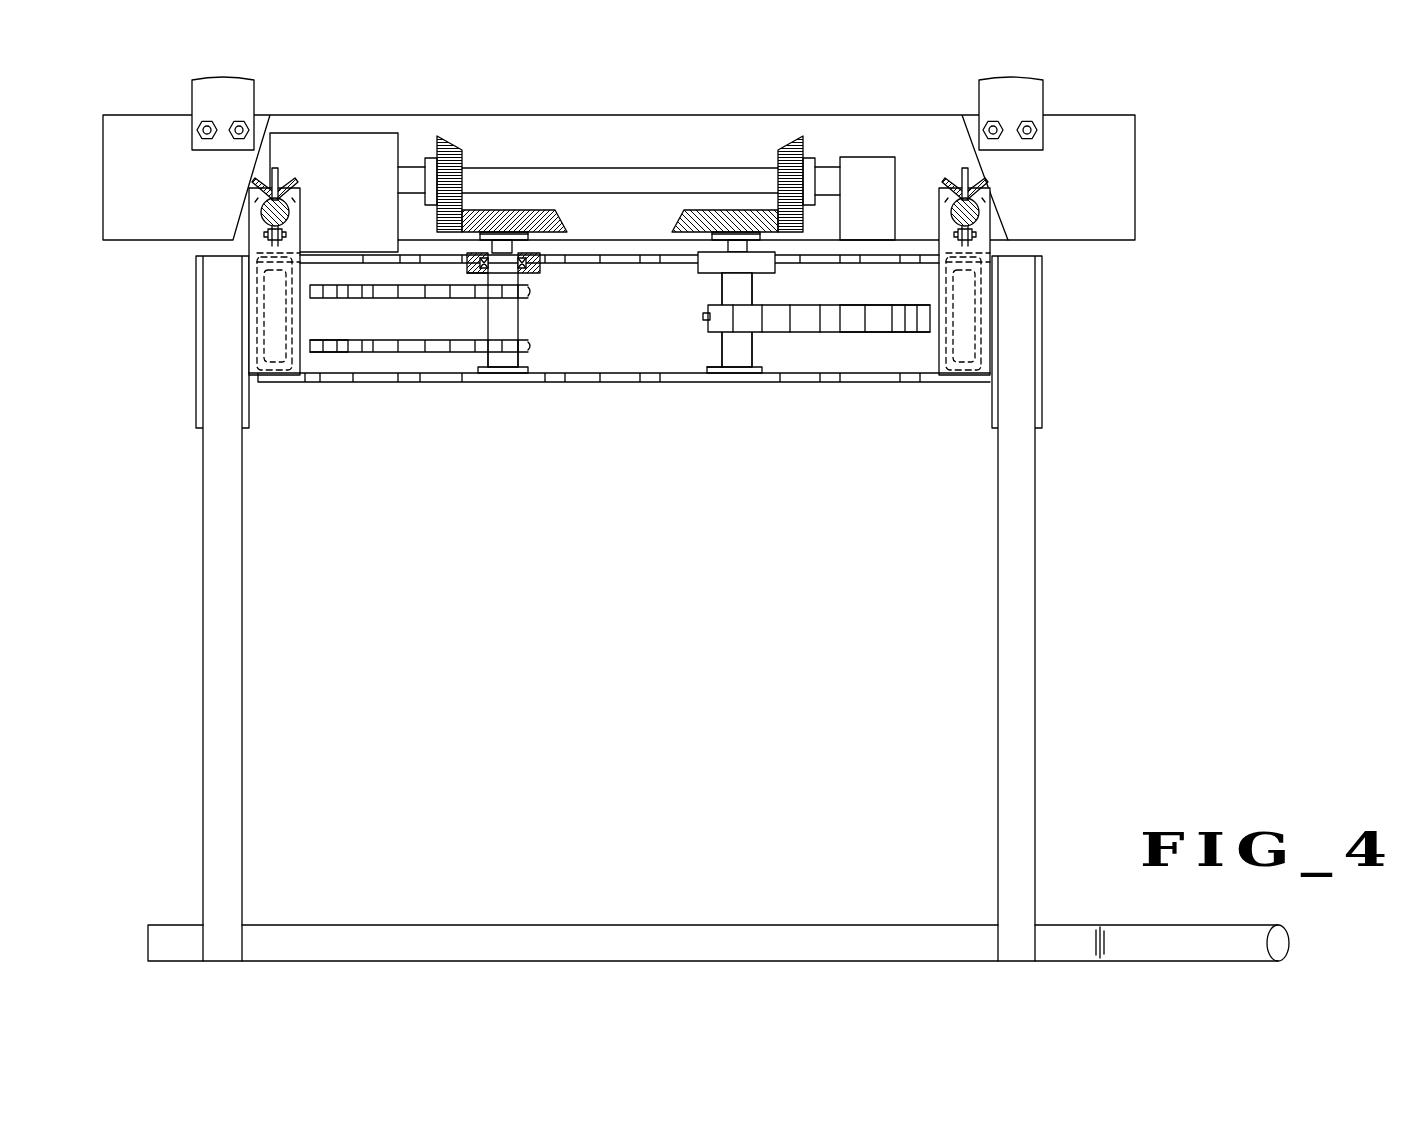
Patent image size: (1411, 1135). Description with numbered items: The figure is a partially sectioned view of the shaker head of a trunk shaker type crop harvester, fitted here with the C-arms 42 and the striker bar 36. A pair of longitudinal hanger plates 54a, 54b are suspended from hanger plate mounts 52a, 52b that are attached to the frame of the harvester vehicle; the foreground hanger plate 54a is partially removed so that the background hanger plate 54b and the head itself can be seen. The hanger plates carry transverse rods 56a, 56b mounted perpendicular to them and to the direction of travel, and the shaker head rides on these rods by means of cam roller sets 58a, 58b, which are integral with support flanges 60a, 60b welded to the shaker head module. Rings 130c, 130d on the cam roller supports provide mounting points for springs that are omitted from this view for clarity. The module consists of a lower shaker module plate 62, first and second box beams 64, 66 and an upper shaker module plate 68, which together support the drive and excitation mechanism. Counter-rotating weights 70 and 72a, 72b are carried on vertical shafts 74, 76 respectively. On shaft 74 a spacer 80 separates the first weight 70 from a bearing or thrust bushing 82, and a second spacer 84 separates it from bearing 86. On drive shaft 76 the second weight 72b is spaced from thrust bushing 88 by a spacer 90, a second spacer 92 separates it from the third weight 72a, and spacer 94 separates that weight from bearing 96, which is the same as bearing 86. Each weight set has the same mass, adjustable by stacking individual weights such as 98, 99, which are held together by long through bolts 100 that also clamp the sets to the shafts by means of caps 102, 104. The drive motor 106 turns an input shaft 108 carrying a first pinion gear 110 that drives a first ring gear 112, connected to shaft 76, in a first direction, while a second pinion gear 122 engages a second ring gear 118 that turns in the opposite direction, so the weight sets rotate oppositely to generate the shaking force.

The striker bar 36 is at (650, 925).
The C-arms 42 is at (242, 718).
The hanger plate mount 52a is at (192, 90).
The hanger plate mount 52b is at (1045, 89).
The longitudinal hanger plate 54a is at (170, 177).
The longitudinal hanger plate 54b is at (646, 160).
The transverse rod 56a is at (262, 217).
The transverse rod 56b is at (985, 212).
The cam roller set 58a is at (290, 184).
The cam roller set 58b is at (985, 190).
The support flange 60a is at (257, 234).
The support flange 60b is at (1013, 257).
The lower shaker module plate 62 is at (490, 385).
The first box beam 64 is at (950, 365).
The second box beam 66 is at (262, 345).
The upper shaker module plate 68 is at (620, 263).
The first weight 70 is at (810, 310).
The third weight 72a is at (372, 298).
The second weight 72b is at (408, 352).
The vertical shaft 74 is at (705, 250).
The vertical drive shaft 76 is at (530, 247).
The spacer 80 is at (760, 345).
The thrust bushing 82 is at (705, 385).
The second spacer 84 is at (752, 283).
The bearing 86 is at (700, 268).
The thrust bushing 88 is at (530, 373).
The spacer 90 is at (520, 358).
The second spacer 92 is at (520, 315).
The spacer 94 is at (540, 263).
The bearing 96 is at (470, 262).
The individual weight 98 is at (855, 332).
The individual weight 99 is at (322, 352).
The through bolt 100 is at (703, 318).
The cap 102 is at (712, 368).
The cap 104 is at (745, 325).
The drive motor 106 is at (360, 133).
The input shaft 108 is at (563, 168).
The first pinion gear 110 is at (463, 160).
The first ring gear 112 is at (500, 212).
The second ring gear 118 is at (735, 210).
The second pinion gear 122 is at (790, 140).
The ring 130c is at (963, 180).
The ring 130d is at (277, 170).